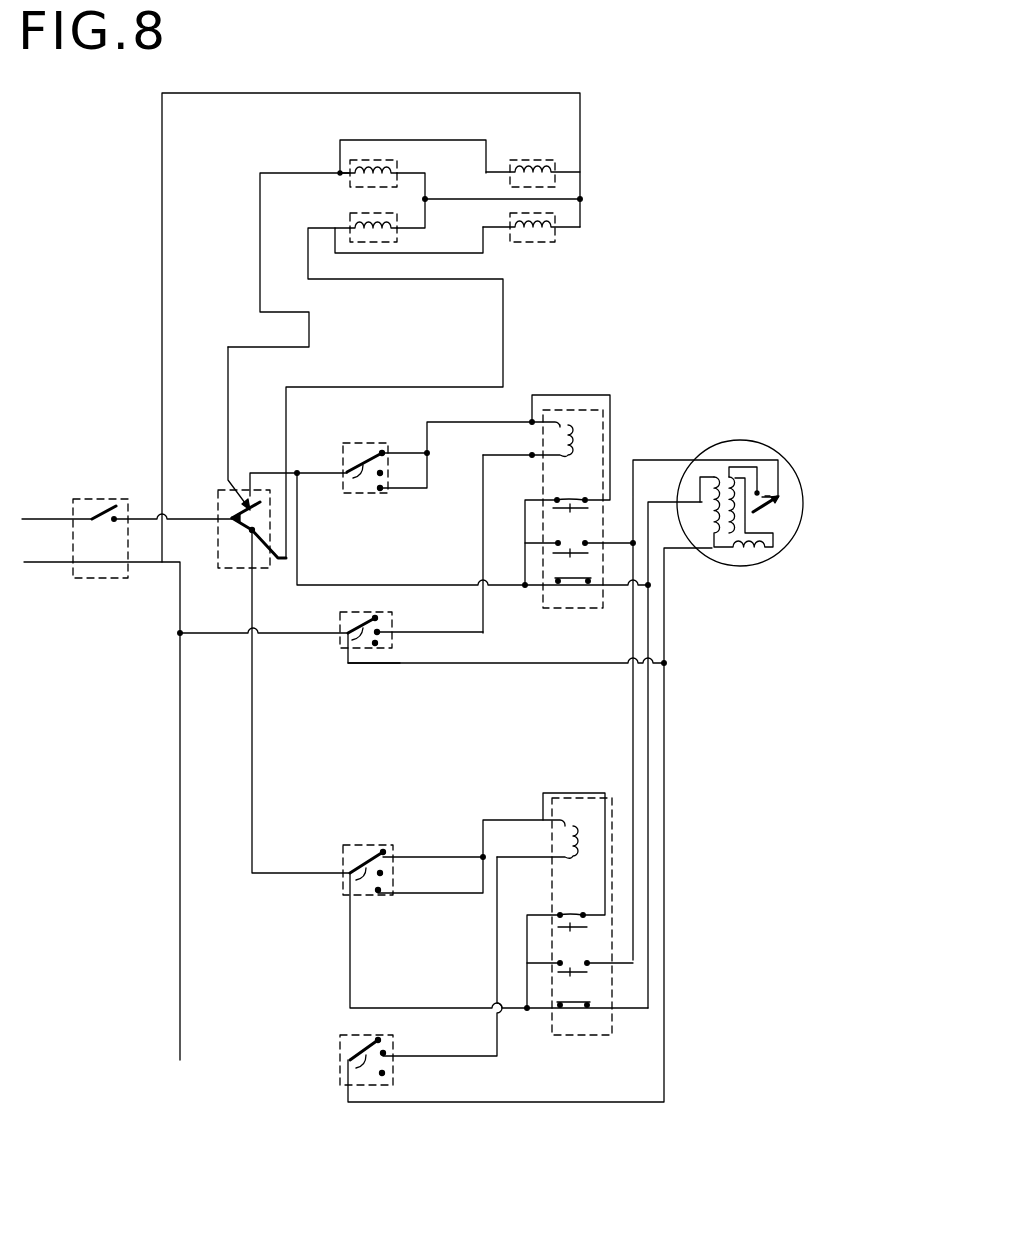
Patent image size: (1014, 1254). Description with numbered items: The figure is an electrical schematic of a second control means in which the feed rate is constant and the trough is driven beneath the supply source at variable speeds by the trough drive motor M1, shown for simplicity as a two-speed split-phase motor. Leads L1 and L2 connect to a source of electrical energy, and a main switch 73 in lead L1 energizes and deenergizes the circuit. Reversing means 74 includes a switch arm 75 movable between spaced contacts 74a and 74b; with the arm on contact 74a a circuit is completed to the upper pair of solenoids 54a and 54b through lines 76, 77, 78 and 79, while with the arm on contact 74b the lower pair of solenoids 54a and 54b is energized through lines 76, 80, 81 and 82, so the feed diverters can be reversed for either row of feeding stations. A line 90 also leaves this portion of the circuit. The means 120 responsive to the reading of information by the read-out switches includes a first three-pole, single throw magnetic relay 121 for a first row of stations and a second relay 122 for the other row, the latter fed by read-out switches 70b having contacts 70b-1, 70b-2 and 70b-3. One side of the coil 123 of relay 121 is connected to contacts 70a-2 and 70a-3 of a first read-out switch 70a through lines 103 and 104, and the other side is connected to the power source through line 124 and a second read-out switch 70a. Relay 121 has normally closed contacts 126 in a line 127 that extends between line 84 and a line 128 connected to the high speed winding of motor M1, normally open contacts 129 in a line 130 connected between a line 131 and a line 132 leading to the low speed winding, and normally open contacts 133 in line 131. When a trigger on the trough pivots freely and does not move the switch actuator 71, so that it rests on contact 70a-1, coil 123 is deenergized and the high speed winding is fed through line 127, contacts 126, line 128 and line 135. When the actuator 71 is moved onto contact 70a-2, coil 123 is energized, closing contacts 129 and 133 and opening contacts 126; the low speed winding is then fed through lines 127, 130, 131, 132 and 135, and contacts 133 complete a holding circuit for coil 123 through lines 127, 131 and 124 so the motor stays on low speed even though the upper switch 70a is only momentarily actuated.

The line 76 is at (162, 386).
The line 79 is at (443, 140).
The solenoid 54a is at (352, 170).
The solenoid 54b is at (557, 168).
The line 80 is at (488, 199).
The line 81 is at (477, 255).
The line 78 is at (260, 262).
The line 77 is at (246, 332).
The line 82 is at (440, 387).
The line 84 is at (272, 470).
The lead L1 is at (40, 519).
The lead L2 is at (30, 563).
The main switch 73 is at (103, 508).
The reversing means 74 is at (233, 570).
The contact 74a is at (235, 505).
The contact 74b is at (250, 531).
The switch arm 75 is at (230, 513).
The conductor 90 is at (252, 750).
The read-out switch 70a is at (344, 465).
The switch actuator 71 is at (352, 478).
The contact 70a-1 is at (380, 473).
The contact 70a-2 is at (382, 450).
The contact 70a-3 is at (380, 490).
The line 103 is at (405, 450).
The line 104 is at (496, 432).
The means responsive to the reading of information 120 is at (586, 398).
The first three-pole single throw magnetic relay 121 is at (603, 432).
The coil 123 is at (560, 437).
The line 124 is at (483, 530).
The second pair of normally open contacts 133 is at (557, 498).
The line 131 is at (525, 514).
The first pair of normally open contacts 129 is at (560, 543).
The line 130 is at (548, 547).
The first pair of normally closed contacts 126 is at (570, 582).
The line 127 is at (370, 587).
The line 132 is at (682, 446).
The trough drive motor M1 is at (745, 442).
The line 128 is at (648, 568).
The line 135 is at (520, 664).
The read-out switch 70b is at (343, 850).
The switch contact 70b-1 is at (382, 873).
The switch contact 70b-2 is at (400, 830).
The switch contact 70b-3 is at (378, 892).
The second three-pole single throw magnetic relay 122 is at (612, 870).